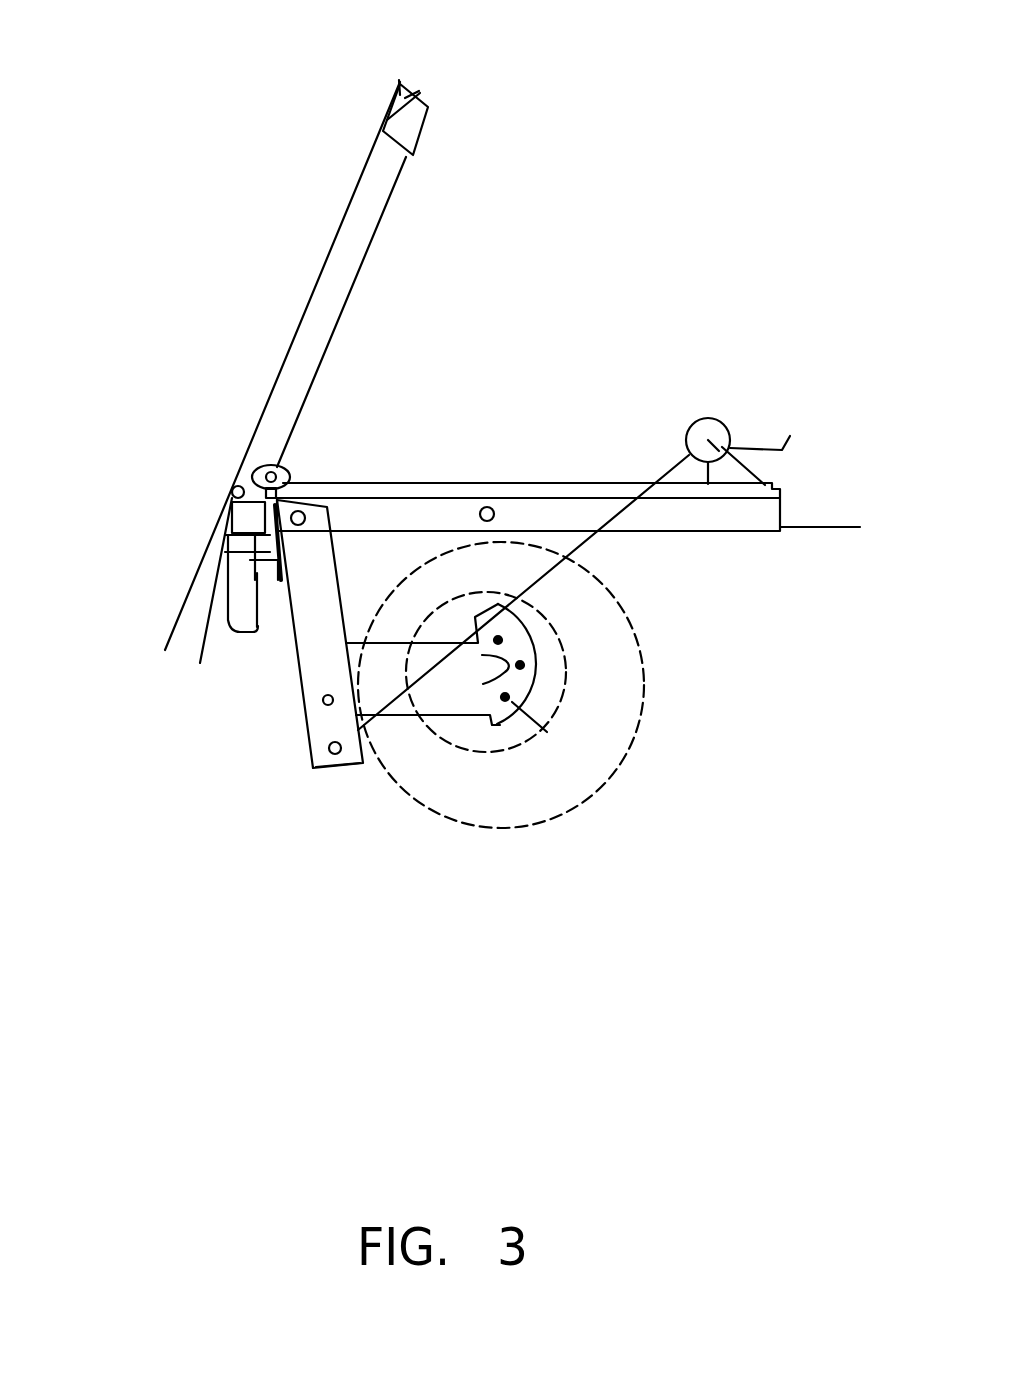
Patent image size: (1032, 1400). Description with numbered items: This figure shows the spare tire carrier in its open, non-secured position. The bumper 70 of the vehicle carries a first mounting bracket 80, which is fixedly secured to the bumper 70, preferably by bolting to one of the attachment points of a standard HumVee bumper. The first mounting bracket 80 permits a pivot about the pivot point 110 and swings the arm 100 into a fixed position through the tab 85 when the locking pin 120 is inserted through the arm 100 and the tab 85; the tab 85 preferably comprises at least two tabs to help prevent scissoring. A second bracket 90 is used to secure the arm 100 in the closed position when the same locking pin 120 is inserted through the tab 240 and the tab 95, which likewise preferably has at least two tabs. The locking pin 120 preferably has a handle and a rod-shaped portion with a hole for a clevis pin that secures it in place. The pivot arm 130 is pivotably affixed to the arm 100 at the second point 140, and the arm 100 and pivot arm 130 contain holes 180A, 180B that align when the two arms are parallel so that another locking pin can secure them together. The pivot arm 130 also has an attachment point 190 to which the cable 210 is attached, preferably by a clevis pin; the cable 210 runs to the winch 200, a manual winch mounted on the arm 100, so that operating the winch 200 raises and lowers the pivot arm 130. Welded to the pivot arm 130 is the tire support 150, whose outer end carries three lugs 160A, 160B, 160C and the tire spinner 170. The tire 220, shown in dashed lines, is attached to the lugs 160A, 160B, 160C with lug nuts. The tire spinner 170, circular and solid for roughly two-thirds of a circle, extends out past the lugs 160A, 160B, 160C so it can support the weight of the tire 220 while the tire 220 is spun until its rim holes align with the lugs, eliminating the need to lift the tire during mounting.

The bumper 70 is at (325, 247).
The first mounting bracket 80 is at (220, 628).
The tab 85 is at (228, 545).
The second bracket 90 is at (381, 139).
The tab 95 is at (399, 80).
The arm 100 is at (598, 494).
The pivot point 110 is at (232, 491).
The locking pin 120 is at (268, 465).
The pivot arm 130 is at (322, 701).
The second point 140 is at (307, 514).
The tire support 150 is at (403, 716).
The lug 160A is at (547, 732).
The lug 160B is at (520, 665).
The lug 160C is at (498, 640).
The tire spinner 170 is at (505, 697).
The hole 180A is at (329, 748).
The hole 180B is at (493, 512).
The attachment point 190 is at (332, 770).
The winch 200 is at (700, 418).
The cable 210 is at (585, 540).
The tire 220 is at (487, 832).
The tab 240 is at (828, 525).